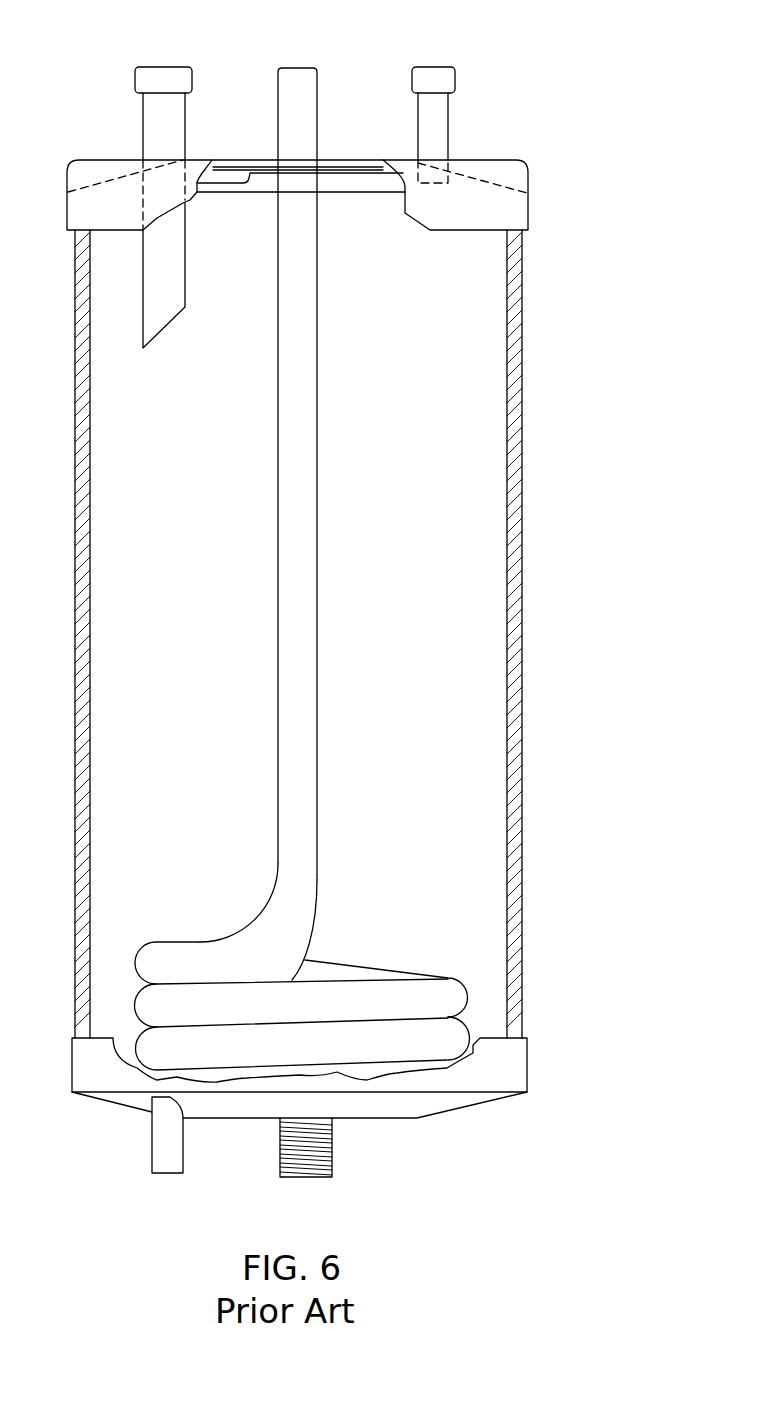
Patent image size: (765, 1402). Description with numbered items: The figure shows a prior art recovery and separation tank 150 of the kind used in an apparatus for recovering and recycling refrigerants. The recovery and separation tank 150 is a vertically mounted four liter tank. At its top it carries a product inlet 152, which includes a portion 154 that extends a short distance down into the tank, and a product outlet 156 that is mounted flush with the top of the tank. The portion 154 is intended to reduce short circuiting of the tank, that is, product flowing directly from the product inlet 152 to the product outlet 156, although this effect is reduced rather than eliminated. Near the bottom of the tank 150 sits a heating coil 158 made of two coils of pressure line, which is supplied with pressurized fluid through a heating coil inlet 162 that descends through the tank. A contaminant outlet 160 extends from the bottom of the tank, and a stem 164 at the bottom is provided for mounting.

The recovery and separation tank 150 is at (522, 573).
The product inlet 152 is at (158, 65).
The portion 154 is at (197, 202).
The product outlet 156 is at (448, 107).
The heating coil 158 is at (460, 988).
The contaminant outlet 160 is at (150, 1155).
The heating coil inlet 162 is at (318, 80).
The stem 164 is at (332, 1158).